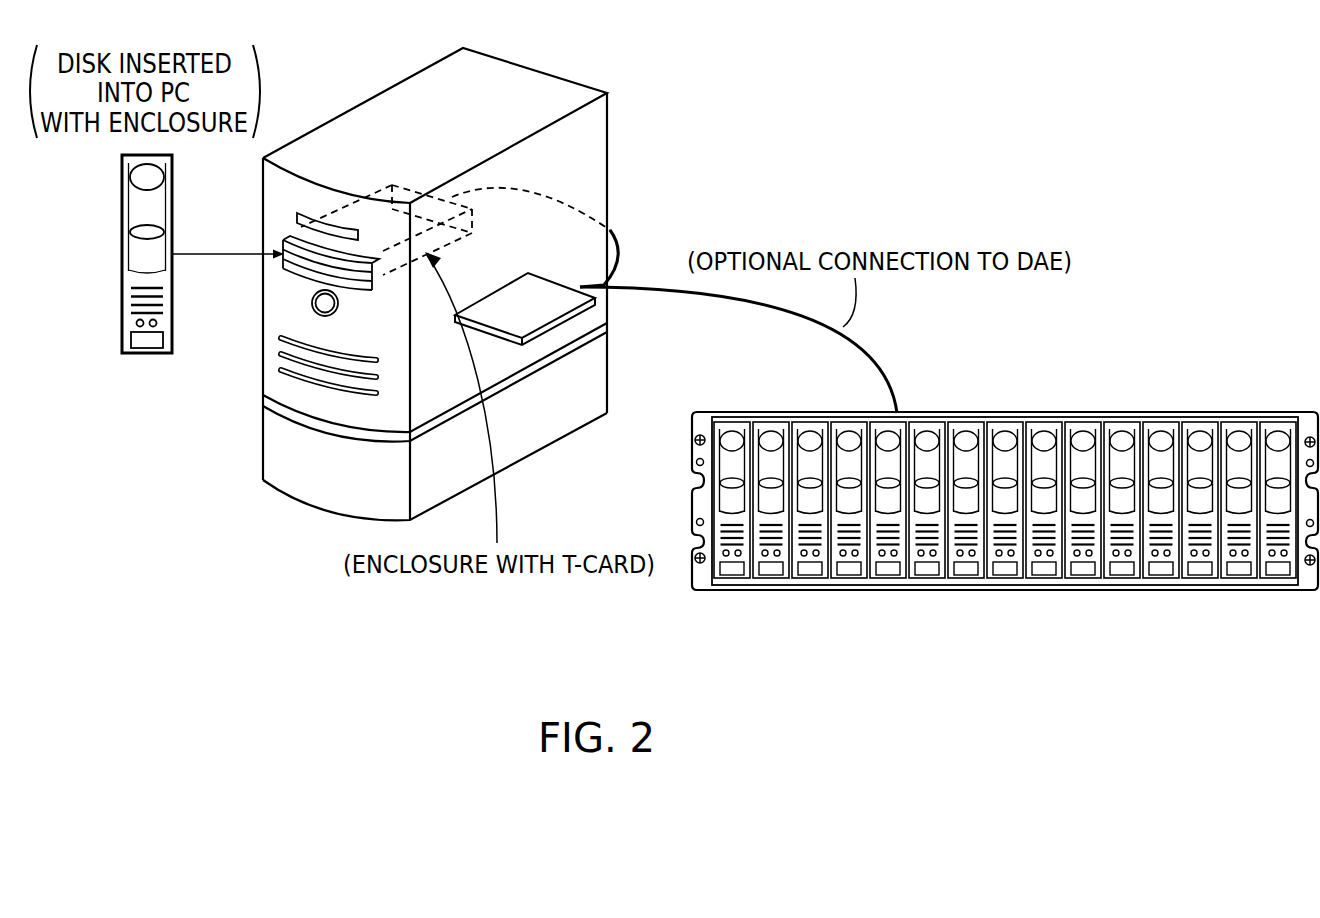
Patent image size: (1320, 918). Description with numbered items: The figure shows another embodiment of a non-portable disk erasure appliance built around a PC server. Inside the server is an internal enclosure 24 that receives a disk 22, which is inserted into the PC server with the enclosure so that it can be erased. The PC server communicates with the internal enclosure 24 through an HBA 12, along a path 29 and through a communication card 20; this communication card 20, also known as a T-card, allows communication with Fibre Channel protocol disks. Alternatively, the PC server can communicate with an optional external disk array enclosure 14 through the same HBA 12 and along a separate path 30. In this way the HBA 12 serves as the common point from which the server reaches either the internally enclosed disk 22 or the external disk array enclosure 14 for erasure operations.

The HBA 12 is at (497, 298).
The external disk array enclosure 14 is at (1196, 412).
The communication card 20 is at (396, 215).
The disk 22 is at (147, 355).
The internal enclosure 24 is at (393, 272).
The path 29 is at (619, 248).
The path 30 is at (877, 353).